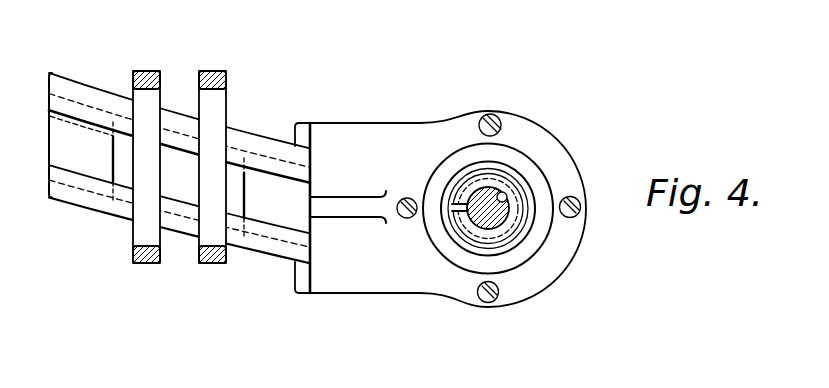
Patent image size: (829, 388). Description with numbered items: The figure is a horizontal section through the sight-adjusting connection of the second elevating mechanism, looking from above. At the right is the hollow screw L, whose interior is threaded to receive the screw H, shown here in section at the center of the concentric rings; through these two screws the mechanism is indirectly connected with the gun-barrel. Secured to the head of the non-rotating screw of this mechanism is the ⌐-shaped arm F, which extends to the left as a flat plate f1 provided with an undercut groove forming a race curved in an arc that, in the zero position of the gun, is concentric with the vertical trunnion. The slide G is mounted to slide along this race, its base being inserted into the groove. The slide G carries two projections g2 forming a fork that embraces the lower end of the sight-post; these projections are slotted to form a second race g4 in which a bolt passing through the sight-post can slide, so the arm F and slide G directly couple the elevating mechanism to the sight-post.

The arm F is at (364, 271).
The slide G is at (167, 170).
The screw H is at (506, 198).
The hollow screw L is at (470, 236).
The plate f1 is at (123, 209).
The projections g2 is at (207, 264).
The second race g4 is at (120, 165).